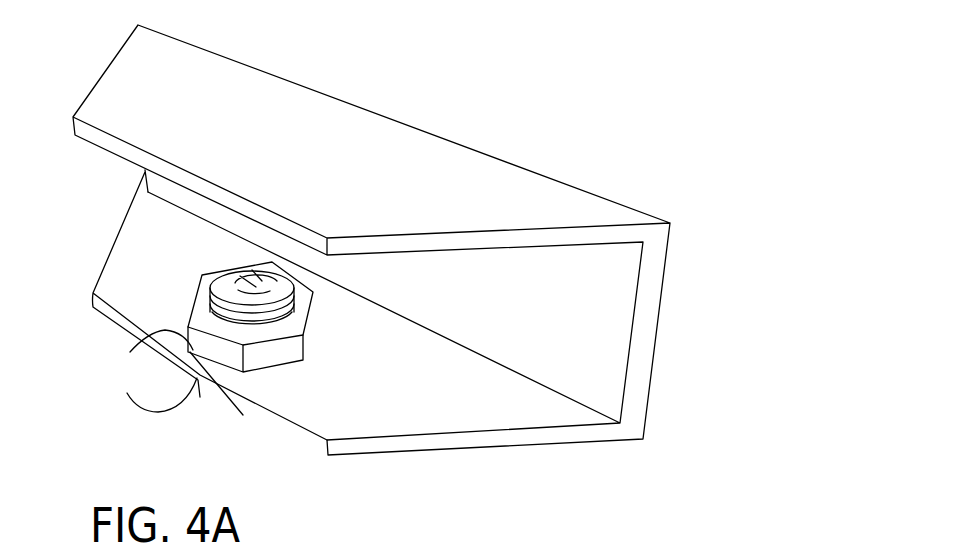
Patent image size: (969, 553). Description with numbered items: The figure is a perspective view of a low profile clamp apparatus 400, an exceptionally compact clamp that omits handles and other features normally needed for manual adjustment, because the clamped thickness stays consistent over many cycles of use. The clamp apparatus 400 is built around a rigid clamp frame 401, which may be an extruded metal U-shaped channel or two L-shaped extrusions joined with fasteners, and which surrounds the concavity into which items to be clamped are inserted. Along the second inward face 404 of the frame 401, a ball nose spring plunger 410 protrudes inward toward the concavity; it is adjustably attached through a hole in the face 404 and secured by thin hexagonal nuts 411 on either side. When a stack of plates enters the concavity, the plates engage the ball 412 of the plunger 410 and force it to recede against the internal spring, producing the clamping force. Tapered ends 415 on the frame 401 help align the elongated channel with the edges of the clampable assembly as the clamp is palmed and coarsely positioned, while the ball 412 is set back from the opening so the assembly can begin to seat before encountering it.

The clamp apparatus 400 is at (578, 76).
The rigid clamp frame 401 is at (402, 123).
The second inward face 404 is at (146, 262).
The ball nose spring plunger 410 is at (212, 266).
The nuts 411 is at (141, 371).
The ball 412 is at (238, 268).
The tapered ends 415 is at (497, 445).